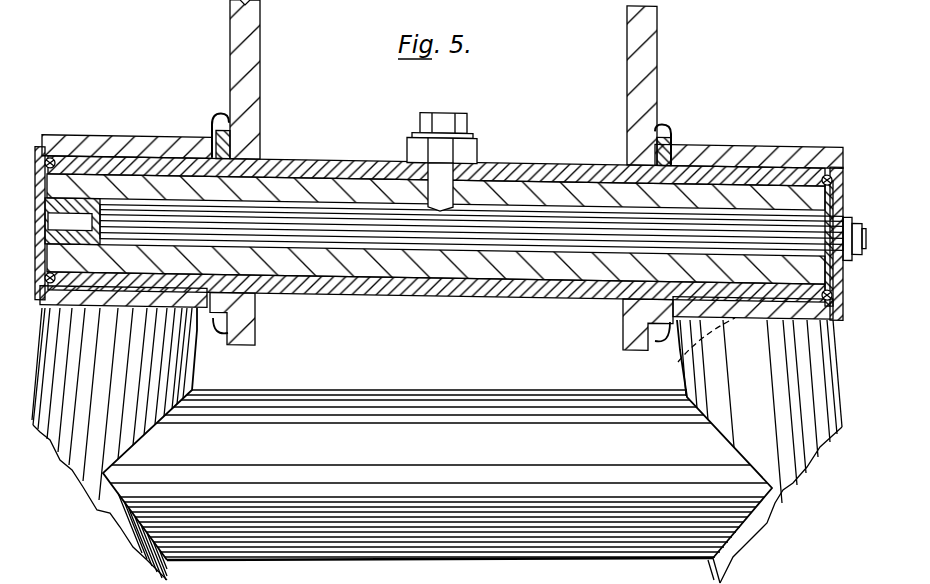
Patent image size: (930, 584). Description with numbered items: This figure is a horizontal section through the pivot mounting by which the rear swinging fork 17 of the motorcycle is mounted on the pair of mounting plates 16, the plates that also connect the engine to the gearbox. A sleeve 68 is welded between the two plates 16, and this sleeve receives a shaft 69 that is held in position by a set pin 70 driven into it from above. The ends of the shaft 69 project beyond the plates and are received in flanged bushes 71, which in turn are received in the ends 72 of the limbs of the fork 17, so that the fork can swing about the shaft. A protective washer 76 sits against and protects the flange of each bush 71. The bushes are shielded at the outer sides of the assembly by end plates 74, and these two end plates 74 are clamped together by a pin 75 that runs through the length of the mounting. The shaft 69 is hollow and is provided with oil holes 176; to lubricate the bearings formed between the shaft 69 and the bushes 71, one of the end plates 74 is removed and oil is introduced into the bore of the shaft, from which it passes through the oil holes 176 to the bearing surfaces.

The mounting plates 16 is at (250, 86).
The rear swinging fork 17 is at (752, 528).
The sleeve 68 is at (583, 170).
The shaft 69 is at (510, 200).
The set pin 70 is at (443, 185).
The flanged bushes 71 is at (115, 163).
The ends of the limbs of the fork 72 is at (147, 375).
The end plates 74 is at (45, 155).
The pin 75 is at (778, 235).
The protective washer 76 is at (212, 117).
The oil holes 176 is at (198, 334).